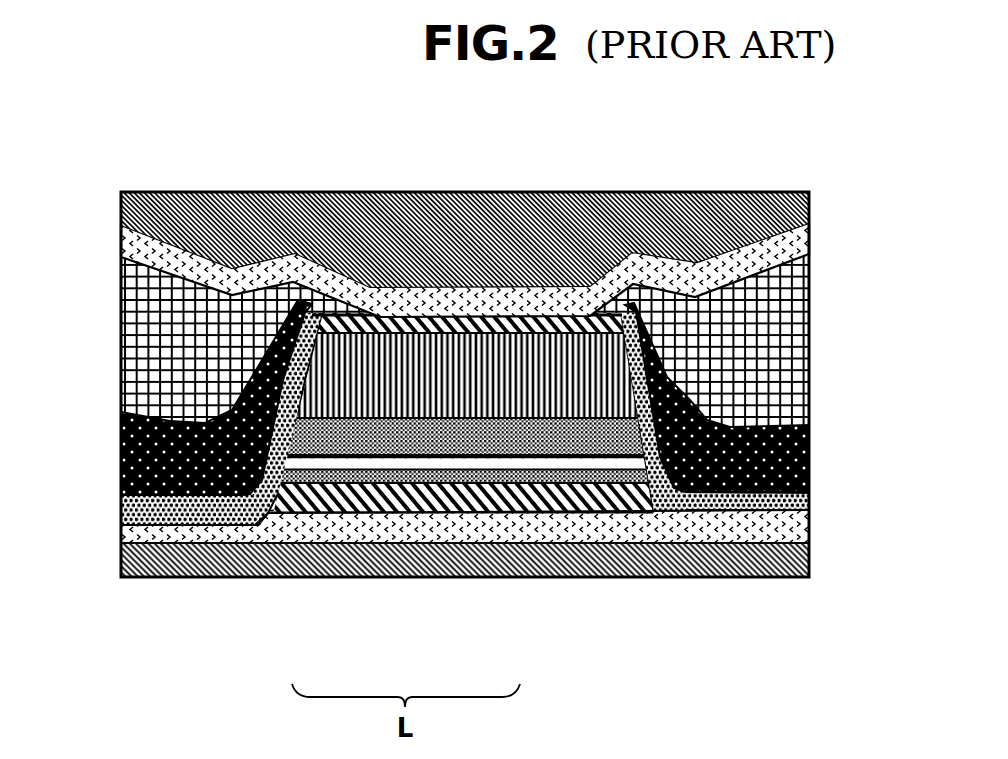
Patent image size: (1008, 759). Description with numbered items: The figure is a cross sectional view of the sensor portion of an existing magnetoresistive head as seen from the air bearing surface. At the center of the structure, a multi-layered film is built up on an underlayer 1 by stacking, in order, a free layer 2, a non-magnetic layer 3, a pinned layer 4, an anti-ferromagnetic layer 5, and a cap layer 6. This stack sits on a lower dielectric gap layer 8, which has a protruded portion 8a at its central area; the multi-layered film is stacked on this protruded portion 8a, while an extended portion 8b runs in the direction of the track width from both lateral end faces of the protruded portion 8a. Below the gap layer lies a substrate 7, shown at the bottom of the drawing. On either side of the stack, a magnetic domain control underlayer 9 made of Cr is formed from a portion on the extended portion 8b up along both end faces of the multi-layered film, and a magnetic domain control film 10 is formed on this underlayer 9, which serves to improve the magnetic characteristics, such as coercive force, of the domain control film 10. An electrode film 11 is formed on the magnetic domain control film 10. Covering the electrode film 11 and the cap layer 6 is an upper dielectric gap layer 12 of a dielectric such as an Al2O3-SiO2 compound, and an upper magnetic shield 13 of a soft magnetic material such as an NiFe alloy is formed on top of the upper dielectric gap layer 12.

The underlayer 1 is at (308, 497).
The free layer 2 is at (335, 476).
The non-magnetic layer 3 is at (371, 463).
The pinned layer 4 is at (415, 456).
The anti-ferromagnetic layer 5 is at (457, 436).
The cap layer 6 is at (500, 375).
The substrate 7 is at (617, 566).
The lower dielectric gap layer 8 is at (463, 586).
The protruded portion 8a is at (565, 530).
The extended portion 8b is at (120, 536).
The magnetic domain control underlayer 9 is at (690, 500).
The magnetic domain control film 10 is at (120, 441).
The electrode film 11 is at (120, 334).
The upper dielectric gap layer 12 is at (811, 242).
The upper magnetic shield 13 is at (811, 206).